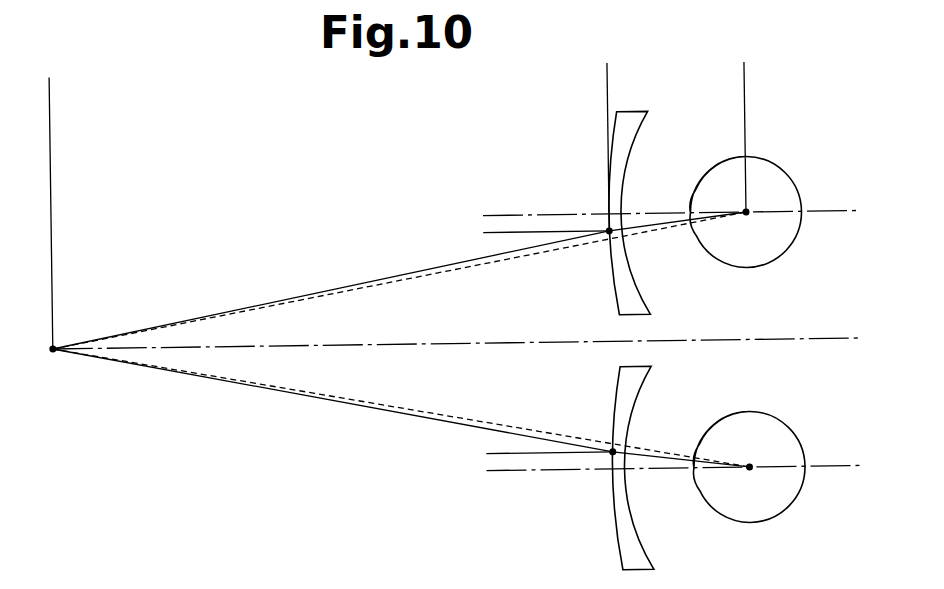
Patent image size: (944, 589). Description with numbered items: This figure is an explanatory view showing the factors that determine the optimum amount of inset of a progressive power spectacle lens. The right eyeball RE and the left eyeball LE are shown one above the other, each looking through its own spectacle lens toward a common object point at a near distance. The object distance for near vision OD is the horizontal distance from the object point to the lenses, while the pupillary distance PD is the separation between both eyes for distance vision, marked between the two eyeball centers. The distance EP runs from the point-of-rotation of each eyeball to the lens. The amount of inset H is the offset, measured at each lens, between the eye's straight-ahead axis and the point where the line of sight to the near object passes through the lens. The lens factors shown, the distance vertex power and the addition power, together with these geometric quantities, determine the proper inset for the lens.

The object distance for near vision OD is at (609, 78).
The distance from the point-of-rotation of the eyeball to the lens EP is at (746, 78).
The pupillary distance PD is at (847, 467).
The amount of inset H is at (493, 490).
The right eyeball RE is at (776, 183).
The left eyeball LE is at (778, 497).